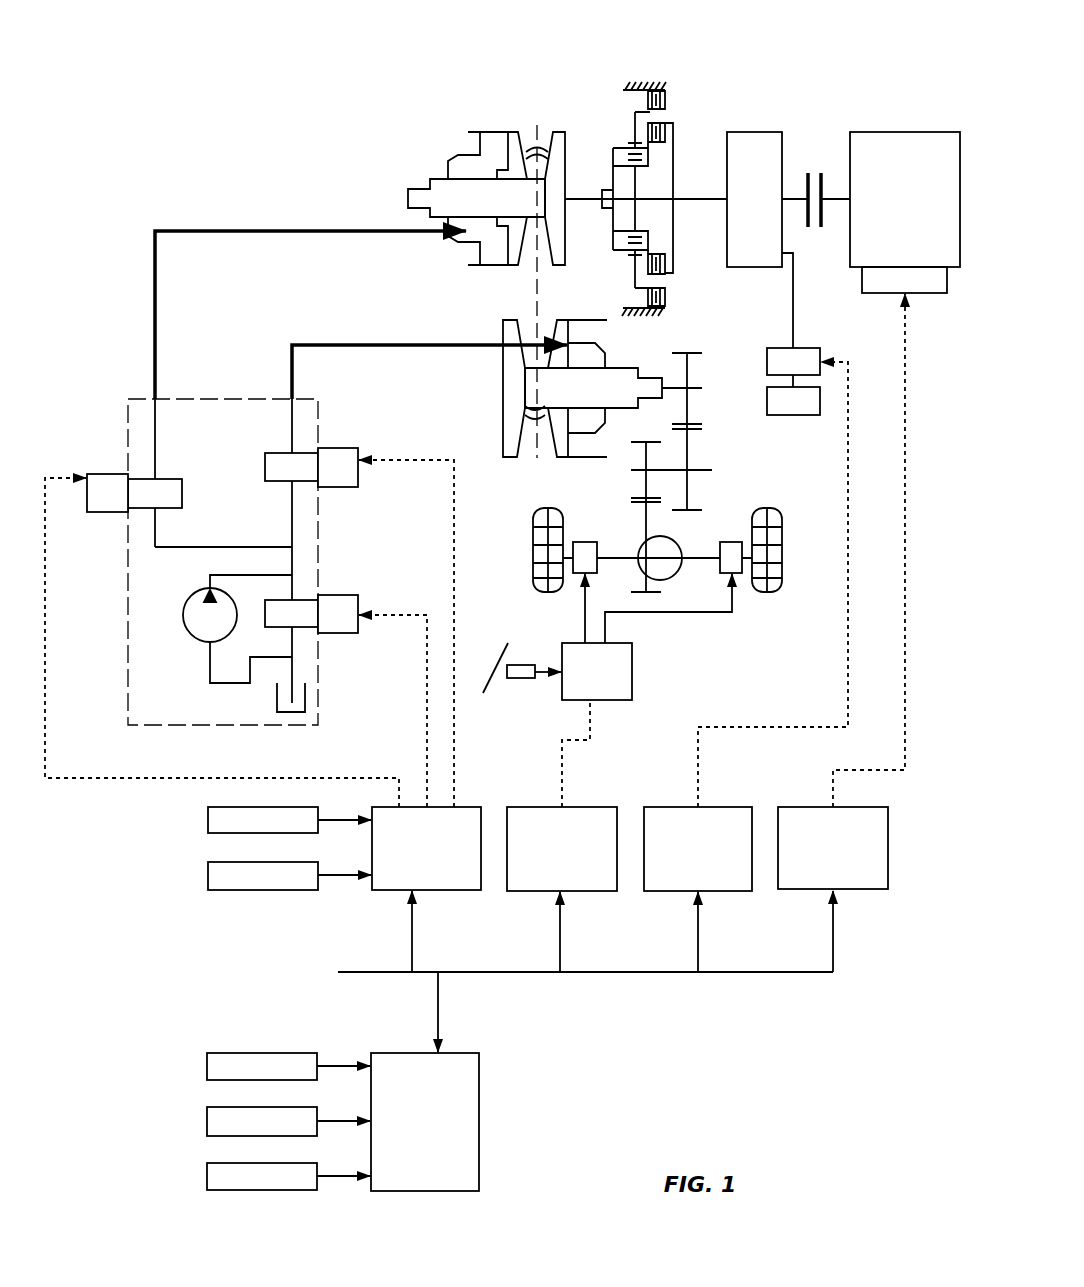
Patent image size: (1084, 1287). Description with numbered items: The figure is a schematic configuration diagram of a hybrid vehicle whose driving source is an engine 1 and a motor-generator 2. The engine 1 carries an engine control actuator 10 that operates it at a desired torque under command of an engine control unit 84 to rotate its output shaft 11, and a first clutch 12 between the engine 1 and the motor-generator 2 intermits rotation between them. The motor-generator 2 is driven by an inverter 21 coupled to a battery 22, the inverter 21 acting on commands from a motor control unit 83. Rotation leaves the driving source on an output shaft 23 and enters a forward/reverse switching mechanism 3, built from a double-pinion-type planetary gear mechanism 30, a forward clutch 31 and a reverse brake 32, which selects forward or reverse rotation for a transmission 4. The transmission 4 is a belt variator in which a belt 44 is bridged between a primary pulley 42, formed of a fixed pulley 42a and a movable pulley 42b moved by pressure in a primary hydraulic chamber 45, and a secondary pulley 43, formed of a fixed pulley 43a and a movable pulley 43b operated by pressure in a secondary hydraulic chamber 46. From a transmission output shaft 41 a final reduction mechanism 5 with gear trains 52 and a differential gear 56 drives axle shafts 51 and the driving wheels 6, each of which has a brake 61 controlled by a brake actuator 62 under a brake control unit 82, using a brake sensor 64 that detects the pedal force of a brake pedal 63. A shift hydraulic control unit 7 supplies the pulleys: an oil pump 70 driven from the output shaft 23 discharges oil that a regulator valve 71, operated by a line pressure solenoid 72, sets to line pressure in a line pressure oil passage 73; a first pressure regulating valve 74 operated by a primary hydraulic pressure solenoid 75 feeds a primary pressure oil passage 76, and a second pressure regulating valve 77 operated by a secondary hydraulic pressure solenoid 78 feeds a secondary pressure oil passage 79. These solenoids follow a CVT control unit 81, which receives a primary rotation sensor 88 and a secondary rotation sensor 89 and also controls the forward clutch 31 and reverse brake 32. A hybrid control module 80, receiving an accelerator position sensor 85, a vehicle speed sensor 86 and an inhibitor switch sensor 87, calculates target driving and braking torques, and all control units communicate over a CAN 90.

The engine 1 is at (915, 132).
The motor-generator 2 is at (762, 132).
The forward/reverse switching mechanism 3 is at (652, 72).
The transmission 4 is at (540, 72).
The final reduction mechanism 5 is at (718, 440).
The driving wheels 6 is at (532, 568).
The shift hydraulic control unit 7 is at (143, 399).
The engine control actuator 10 is at (933, 295).
The output shaft 11 is at (830, 197).
The first clutch 12 is at (808, 170).
The inverter 21 is at (777, 348).
The battery 22 is at (767, 400).
The output shaft 23 is at (696, 197).
The double-pinion-type planetary gear mechanism 30 is at (637, 214).
The forward clutch 31 is at (668, 125).
The reverse brake 32 is at (664, 91).
The transmission output shaft 41 is at (665, 380).
The primary pulley 42 is at (447, 159).
The fixed pulley 42a is at (558, 132).
The movable pulley 42b is at (510, 132).
The secondary pulley 43 is at (553, 388).
The fixed pulley 43a is at (503, 330).
The movable pulley 43b is at (560, 320).
The belt 44 is at (533, 447).
The primary hydraulic chamber 45 is at (493, 143).
The secondary hydraulic chamber 46 is at (580, 430).
The axle shafts 51 is at (610, 572).
The gear trains 52 is at (700, 478).
The differential gear 56 is at (680, 538).
The brake 61 is at (575, 582).
The brake actuator 62 is at (632, 668).
The brake pedal 63 is at (484, 698).
The brake sensor 64 is at (520, 678).
The oil pump 70 is at (190, 632).
The regulator valve 71 is at (300, 600).
The line pressure solenoid 72 is at (345, 633).
The line pressure oil passage 73 is at (180, 548).
The first pressure regulating valve 74 is at (140, 480).
The primary hydraulic pressure solenoid 75 is at (90, 512).
The primary pressure oil passage 76 is at (152, 413).
The second pressure regulating valve 77 is at (298, 452).
The secondary hydraulic pressure solenoid 78 is at (345, 487).
The secondary pressure oil passage 79 is at (290, 425).
The hybrid control module 80 is at (479, 1097).
The CVT control unit 81 is at (448, 891).
The brake control unit 82 is at (588, 893).
The motor control unit 83 is at (723, 893).
The engine control unit 84 is at (858, 891).
The accelerator position sensor 85 is at (207, 1066).
The vehicle speed sensor 86 is at (207, 1121).
The inhibitor switch sensor 87 is at (207, 1176).
The primary rotation sensor 88 is at (208, 820).
The secondary rotation sensor 89 is at (208, 875).
The CAN 90 is at (752, 975).